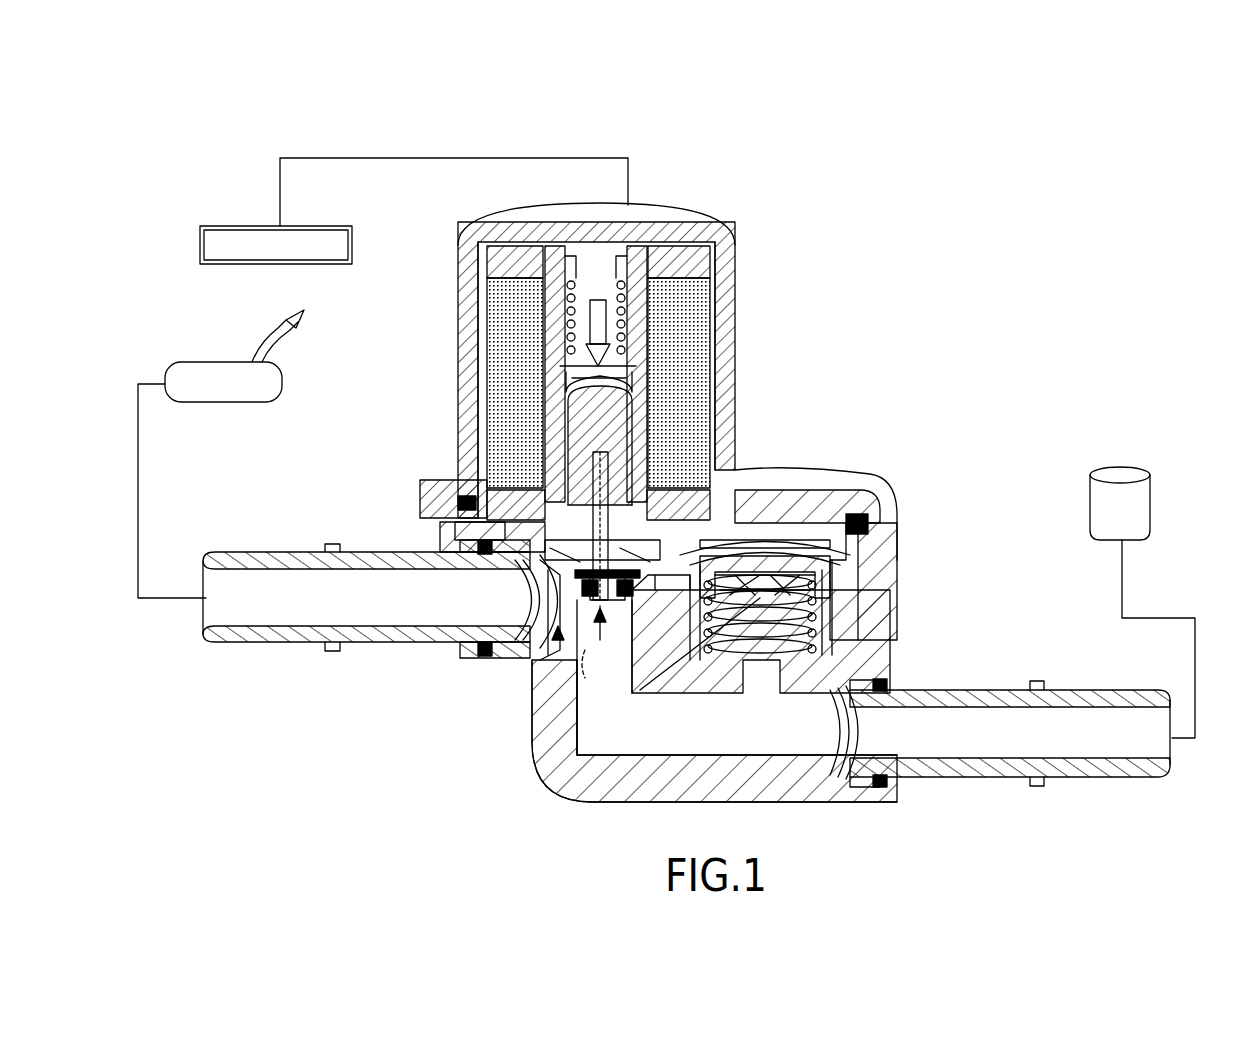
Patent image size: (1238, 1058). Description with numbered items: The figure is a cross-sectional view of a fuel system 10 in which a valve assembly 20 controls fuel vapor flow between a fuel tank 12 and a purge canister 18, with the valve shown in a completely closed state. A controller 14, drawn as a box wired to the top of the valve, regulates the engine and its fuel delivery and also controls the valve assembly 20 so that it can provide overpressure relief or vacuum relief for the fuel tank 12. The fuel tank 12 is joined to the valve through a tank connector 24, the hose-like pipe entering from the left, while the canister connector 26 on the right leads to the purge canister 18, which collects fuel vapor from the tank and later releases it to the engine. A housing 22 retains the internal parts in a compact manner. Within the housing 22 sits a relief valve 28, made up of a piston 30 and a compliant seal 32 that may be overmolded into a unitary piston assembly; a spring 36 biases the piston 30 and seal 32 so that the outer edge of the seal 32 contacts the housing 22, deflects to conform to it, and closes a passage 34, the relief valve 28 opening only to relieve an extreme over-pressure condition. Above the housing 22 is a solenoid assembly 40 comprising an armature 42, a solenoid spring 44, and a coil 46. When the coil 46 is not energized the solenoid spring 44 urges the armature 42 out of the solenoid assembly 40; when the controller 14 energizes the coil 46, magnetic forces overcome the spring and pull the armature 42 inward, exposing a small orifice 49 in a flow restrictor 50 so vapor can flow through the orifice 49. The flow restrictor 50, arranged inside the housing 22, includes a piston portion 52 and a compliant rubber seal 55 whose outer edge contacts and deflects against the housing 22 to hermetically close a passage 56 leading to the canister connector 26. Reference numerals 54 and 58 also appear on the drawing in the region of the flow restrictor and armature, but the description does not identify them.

The fuel system 10 is at (177, 153).
The fuel tank 12 is at (286, 366).
The controller 14 is at (205, 242).
The purge canister 18 is at (1088, 482).
The valve assembly 20 is at (436, 339).
The housing 22 is at (858, 606).
The tank connector 24 is at (262, 646).
The canister connector 26 is at (1061, 684).
The relief valve 28 is at (751, 542).
The piston 30 is at (801, 584).
The compliant seal 32 is at (850, 555).
The passage 34 is at (770, 562).
The spring 36 is at (820, 630).
The solenoid assembly 40 is at (642, 332).
The armature 42 is at (608, 475).
The solenoid spring 44 is at (649, 368).
The coil 46 is at (699, 304).
The orifice 49 is at (600, 660).
The flow restrictor 50 is at (545, 662).
The piston portion 52 is at (602, 536).
The valve seat passage 54 is at (648, 590).
The compliant seal 55 is at (531, 598).
The passage 56 is at (470, 530).
The pilot valve seal 58 is at (607, 621).